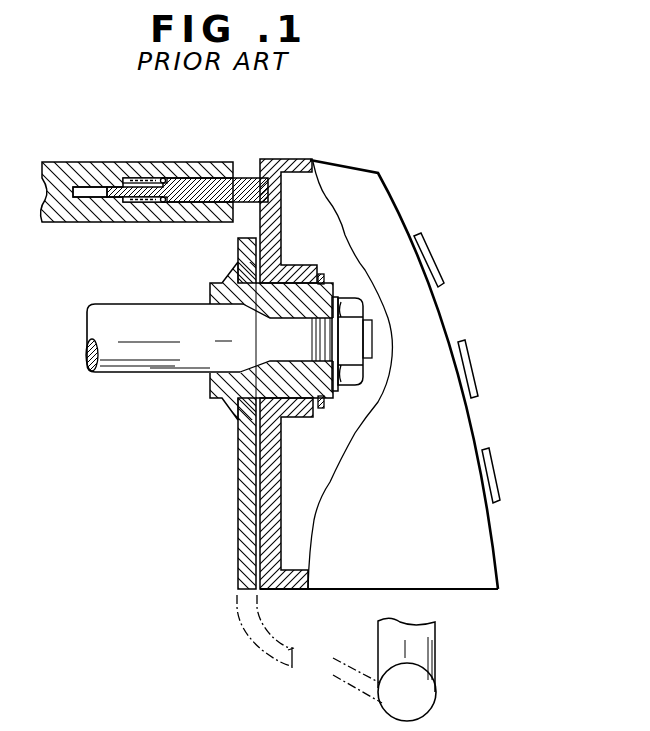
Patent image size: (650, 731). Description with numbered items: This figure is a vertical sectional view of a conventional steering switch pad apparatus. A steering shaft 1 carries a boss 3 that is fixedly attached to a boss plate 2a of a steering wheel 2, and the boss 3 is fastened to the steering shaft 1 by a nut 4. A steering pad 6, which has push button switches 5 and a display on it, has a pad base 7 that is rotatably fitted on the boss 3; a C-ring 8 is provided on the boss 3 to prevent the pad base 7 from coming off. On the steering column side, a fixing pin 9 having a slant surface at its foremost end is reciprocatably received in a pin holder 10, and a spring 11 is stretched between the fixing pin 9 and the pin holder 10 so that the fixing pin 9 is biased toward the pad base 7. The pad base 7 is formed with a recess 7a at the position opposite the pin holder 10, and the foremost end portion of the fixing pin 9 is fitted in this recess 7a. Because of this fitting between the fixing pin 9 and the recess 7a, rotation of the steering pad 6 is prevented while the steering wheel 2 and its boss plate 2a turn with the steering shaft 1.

The steering shaft 1 is at (142, 373).
The steering wheel 2 is at (417, 692).
The boss plate 2a is at (237, 496).
The boss 3 is at (225, 396).
The nut 4 is at (350, 307).
The push button switches 5 is at (490, 472).
The steering pad 6 is at (465, 530).
The pad base 7 is at (283, 217).
The recess 7a is at (268, 188).
The C-ring 8 is at (320, 409).
The fixing pin 9 is at (203, 190).
The pin holder 10 is at (110, 173).
The spring 11 is at (128, 200).